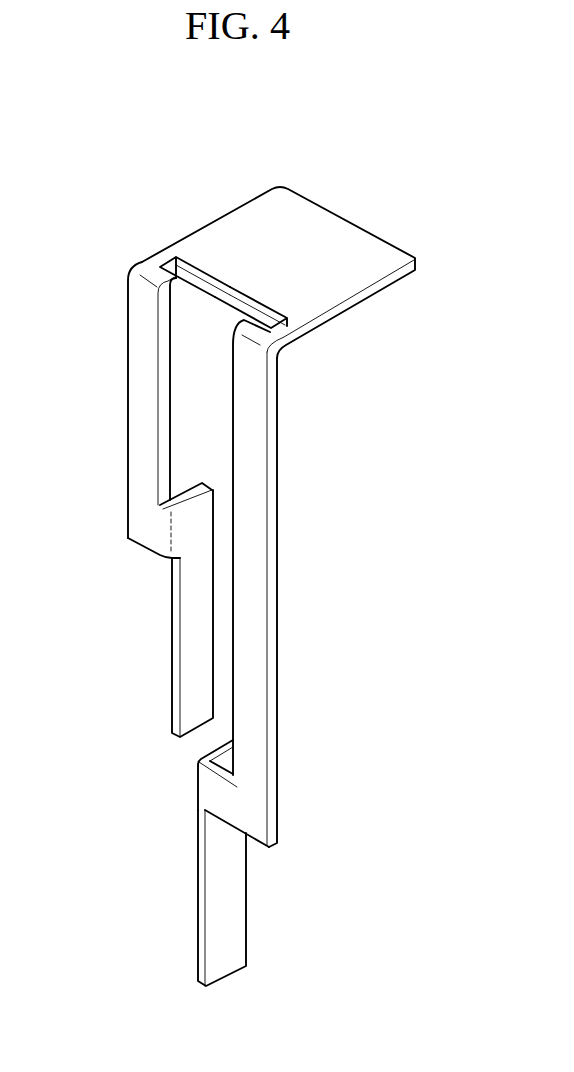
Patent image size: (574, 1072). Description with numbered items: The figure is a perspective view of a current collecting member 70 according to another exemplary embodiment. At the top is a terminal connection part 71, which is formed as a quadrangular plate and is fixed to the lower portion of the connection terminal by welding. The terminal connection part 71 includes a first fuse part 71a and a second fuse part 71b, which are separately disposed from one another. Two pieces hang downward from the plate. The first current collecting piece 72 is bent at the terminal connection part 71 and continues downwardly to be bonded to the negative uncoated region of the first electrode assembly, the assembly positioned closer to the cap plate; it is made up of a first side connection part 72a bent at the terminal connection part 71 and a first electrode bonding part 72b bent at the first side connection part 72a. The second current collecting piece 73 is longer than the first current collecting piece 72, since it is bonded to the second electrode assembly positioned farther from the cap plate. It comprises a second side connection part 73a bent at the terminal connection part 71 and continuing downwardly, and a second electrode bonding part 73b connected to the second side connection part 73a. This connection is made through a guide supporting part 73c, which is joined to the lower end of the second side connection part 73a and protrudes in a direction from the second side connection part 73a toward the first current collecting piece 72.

The current collecting member 70 is at (110, 240).
The terminal connection part 71 is at (342, 277).
The first fuse part 71a is at (165, 257).
The second fuse part 71b is at (286, 328).
The first current collecting piece 72 is at (127, 385).
The first side connection part 72a is at (143, 457).
The first electrode bonding part 72b is at (197, 642).
The second current collecting piece 73 is at (280, 483).
The second side connection part 73a is at (247, 557).
The second electrode bonding part 73b is at (223, 903).
The guide supporting part 73c is at (220, 797).